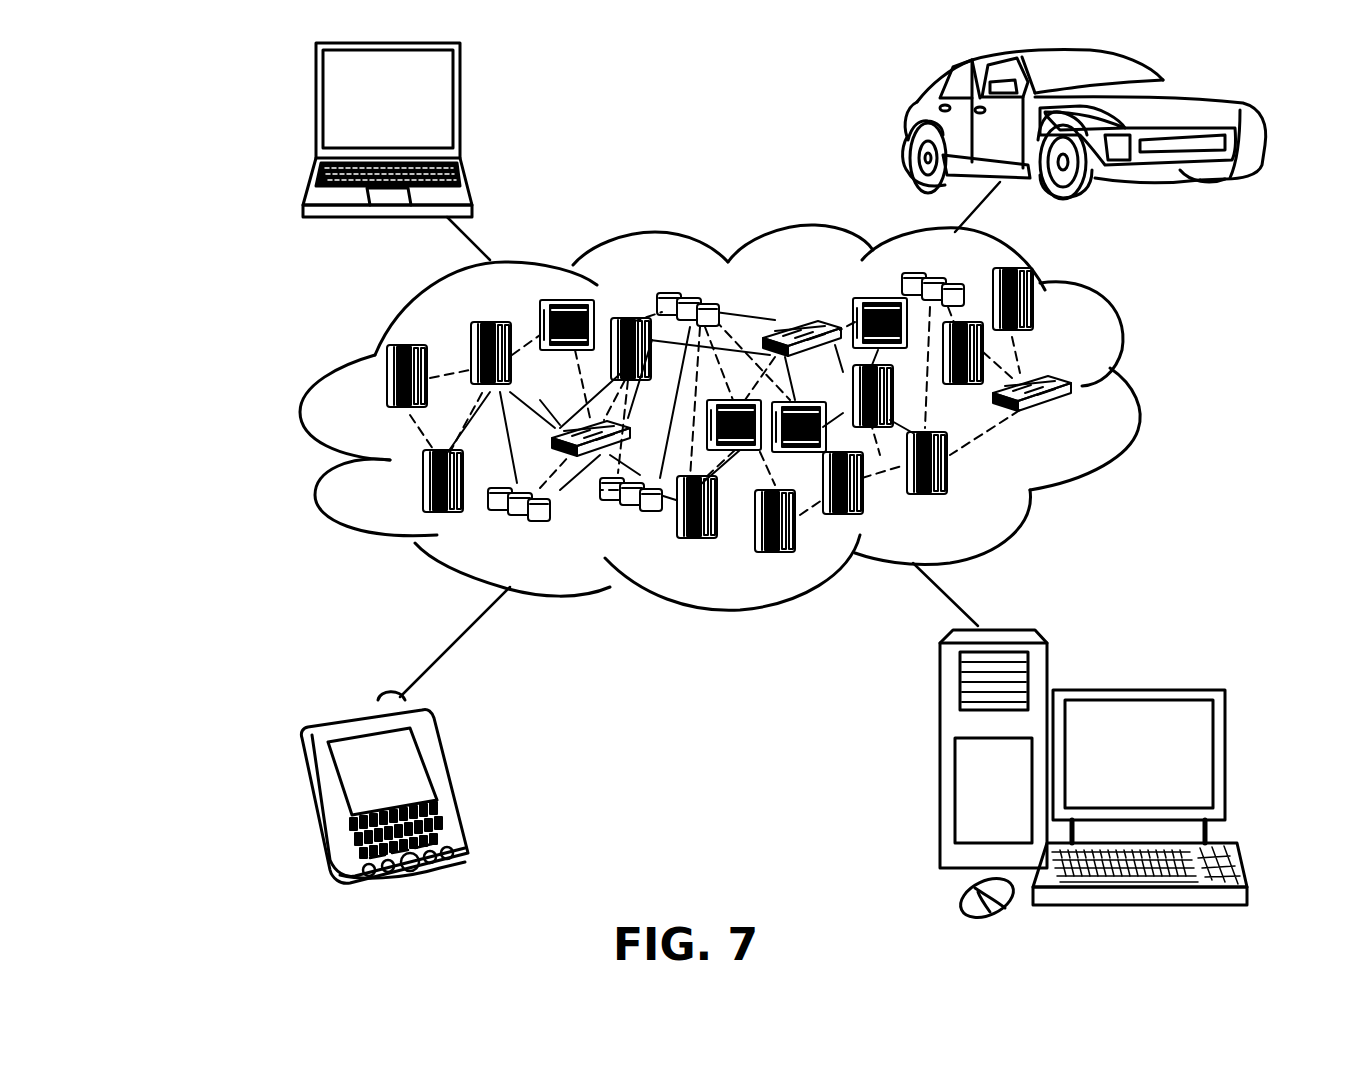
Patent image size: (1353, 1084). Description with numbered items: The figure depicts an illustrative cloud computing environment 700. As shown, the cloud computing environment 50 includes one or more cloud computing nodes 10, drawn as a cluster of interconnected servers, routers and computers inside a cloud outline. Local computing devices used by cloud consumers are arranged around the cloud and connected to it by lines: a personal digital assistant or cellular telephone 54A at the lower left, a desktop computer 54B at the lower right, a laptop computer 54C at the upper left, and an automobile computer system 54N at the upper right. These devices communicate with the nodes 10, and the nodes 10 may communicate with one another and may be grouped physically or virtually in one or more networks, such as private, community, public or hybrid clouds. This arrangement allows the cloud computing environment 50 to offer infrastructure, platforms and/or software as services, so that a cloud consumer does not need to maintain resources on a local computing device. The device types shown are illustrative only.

The cloud computing environment 700 is at (212, 115).
The cloud computing environment 50 is at (1138, 389).
The cloud computing node 10 is at (1073, 421).
The personal digital assistant or cellular telephone 54A is at (452, 782).
The desktop computer 54B is at (1135, 690).
The laptop computer 54C is at (460, 108).
The automobile computer system 54N is at (912, 122).